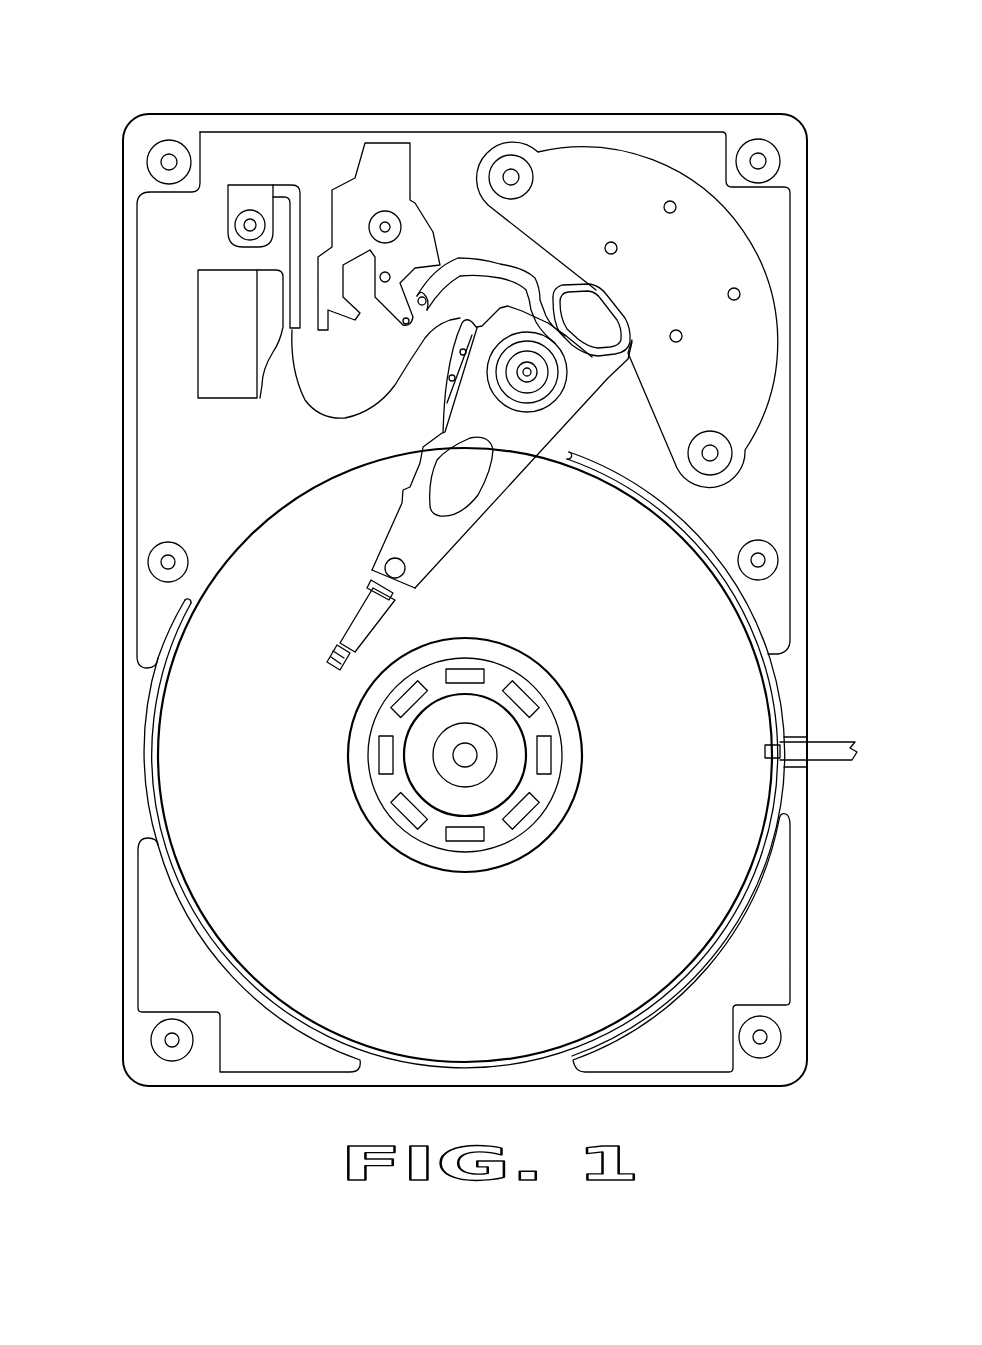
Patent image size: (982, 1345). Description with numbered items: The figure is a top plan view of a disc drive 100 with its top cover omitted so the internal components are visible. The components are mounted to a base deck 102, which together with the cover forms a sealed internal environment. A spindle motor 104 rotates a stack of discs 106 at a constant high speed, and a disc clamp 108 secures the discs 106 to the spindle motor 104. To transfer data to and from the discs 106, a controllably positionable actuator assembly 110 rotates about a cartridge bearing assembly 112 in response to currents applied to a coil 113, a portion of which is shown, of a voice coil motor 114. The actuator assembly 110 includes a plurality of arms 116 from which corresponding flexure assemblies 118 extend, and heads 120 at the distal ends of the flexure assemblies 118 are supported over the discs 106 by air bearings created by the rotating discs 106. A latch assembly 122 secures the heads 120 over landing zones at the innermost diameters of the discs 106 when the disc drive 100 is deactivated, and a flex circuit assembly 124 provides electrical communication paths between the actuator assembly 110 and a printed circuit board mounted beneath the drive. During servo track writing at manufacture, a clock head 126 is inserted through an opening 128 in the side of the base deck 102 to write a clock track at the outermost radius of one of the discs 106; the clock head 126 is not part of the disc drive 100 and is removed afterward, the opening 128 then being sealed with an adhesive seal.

The disc drive 100 is at (230, 92).
The base deck 102 is at (212, 462).
The spindle motor 104 is at (478, 786).
The discs 106 is at (707, 822).
The disc clamp 108 is at (367, 800).
The actuator assembly 110 is at (425, 488).
The cartridge bearing assembly 112 is at (536, 384).
The coil 113 is at (612, 330).
The voice coil motor 114 is at (562, 212).
The arms 116 is at (402, 548).
The flexure assemblies 118 is at (357, 622).
The heads 120 is at (328, 660).
The latch assembly 122 is at (388, 162).
The flex circuit assembly 124 is at (323, 422).
The clock head 126 is at (765, 748).
The opening 128 is at (818, 732).